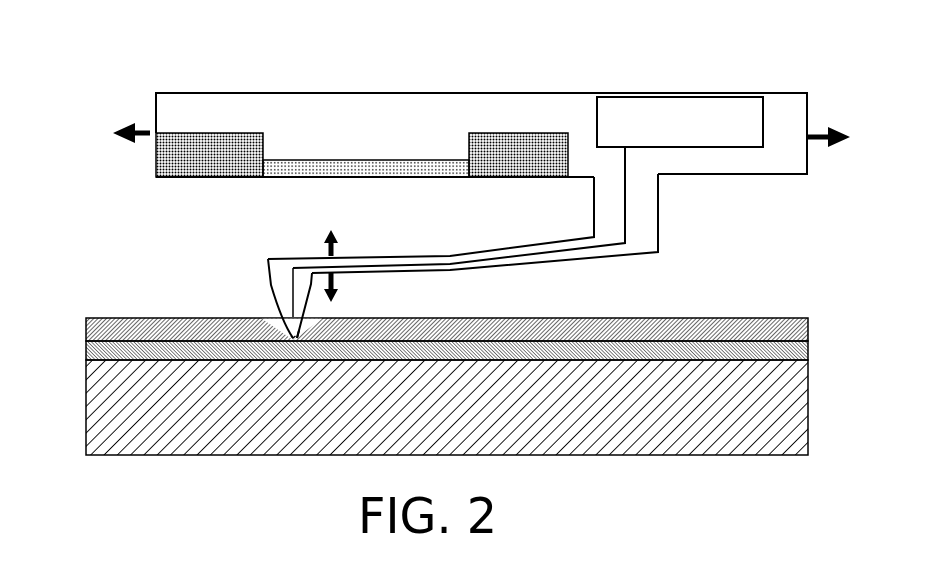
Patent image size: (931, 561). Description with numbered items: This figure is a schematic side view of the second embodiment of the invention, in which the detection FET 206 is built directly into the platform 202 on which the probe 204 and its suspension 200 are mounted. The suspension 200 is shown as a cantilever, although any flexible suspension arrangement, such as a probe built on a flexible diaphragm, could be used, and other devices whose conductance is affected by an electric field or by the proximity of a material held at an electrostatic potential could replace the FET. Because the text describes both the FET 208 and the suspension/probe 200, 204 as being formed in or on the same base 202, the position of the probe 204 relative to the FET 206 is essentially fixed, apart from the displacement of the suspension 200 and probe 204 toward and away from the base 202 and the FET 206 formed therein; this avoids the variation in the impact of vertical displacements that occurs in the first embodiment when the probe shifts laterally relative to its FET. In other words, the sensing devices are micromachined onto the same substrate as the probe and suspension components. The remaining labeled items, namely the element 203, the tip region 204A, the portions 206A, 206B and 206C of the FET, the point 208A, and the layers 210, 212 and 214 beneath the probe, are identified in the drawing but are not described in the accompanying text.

The suspension 200 is at (483, 250).
The platform 202 is at (552, 103).
The voltage source 203 is at (727, 107).
The probe 204 is at (297, 277).
The tip apex 204A is at (300, 336).
The detection FET 206 is at (362, 96).
The source 206A is at (252, 148).
The drain 206B is at (490, 143).
The channel 206C is at (380, 163).
The FET 208 is at (447, 374).
The contact point 208A is at (278, 330).
The upper layer 210 is at (440, 326).
The intermediate layer 212 is at (510, 350).
The substrate 214 is at (550, 438).